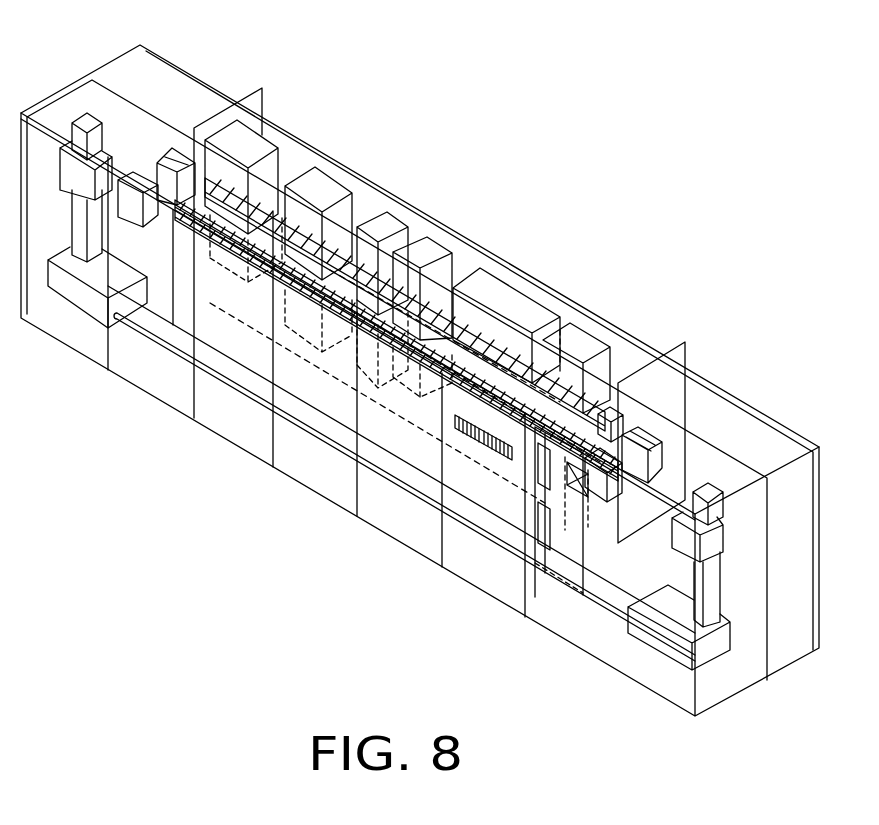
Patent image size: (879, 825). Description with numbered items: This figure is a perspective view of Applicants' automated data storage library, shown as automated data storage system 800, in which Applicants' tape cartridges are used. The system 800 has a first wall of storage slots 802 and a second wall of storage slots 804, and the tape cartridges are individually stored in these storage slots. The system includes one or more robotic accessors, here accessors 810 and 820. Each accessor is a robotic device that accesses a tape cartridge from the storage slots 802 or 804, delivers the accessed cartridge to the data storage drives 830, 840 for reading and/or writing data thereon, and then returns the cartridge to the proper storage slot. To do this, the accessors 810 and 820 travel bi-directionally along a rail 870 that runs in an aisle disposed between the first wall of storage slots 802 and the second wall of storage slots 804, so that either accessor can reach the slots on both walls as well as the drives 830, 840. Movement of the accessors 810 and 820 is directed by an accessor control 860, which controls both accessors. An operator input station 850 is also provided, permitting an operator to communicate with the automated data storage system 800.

The automated data storage system 800 is at (468, 600).
The first wall of storage slots 802 is at (280, 238).
The second wall of storage slots 804 is at (257, 358).
The accessor 810 is at (70, 177).
The accessor 820 is at (720, 542).
The data storage drive 830 is at (392, 223).
The data storage drive 840 is at (430, 250).
The operator input station 850 is at (325, 187).
The accessor control 860 is at (263, 147).
The rail 870 is at (330, 440).